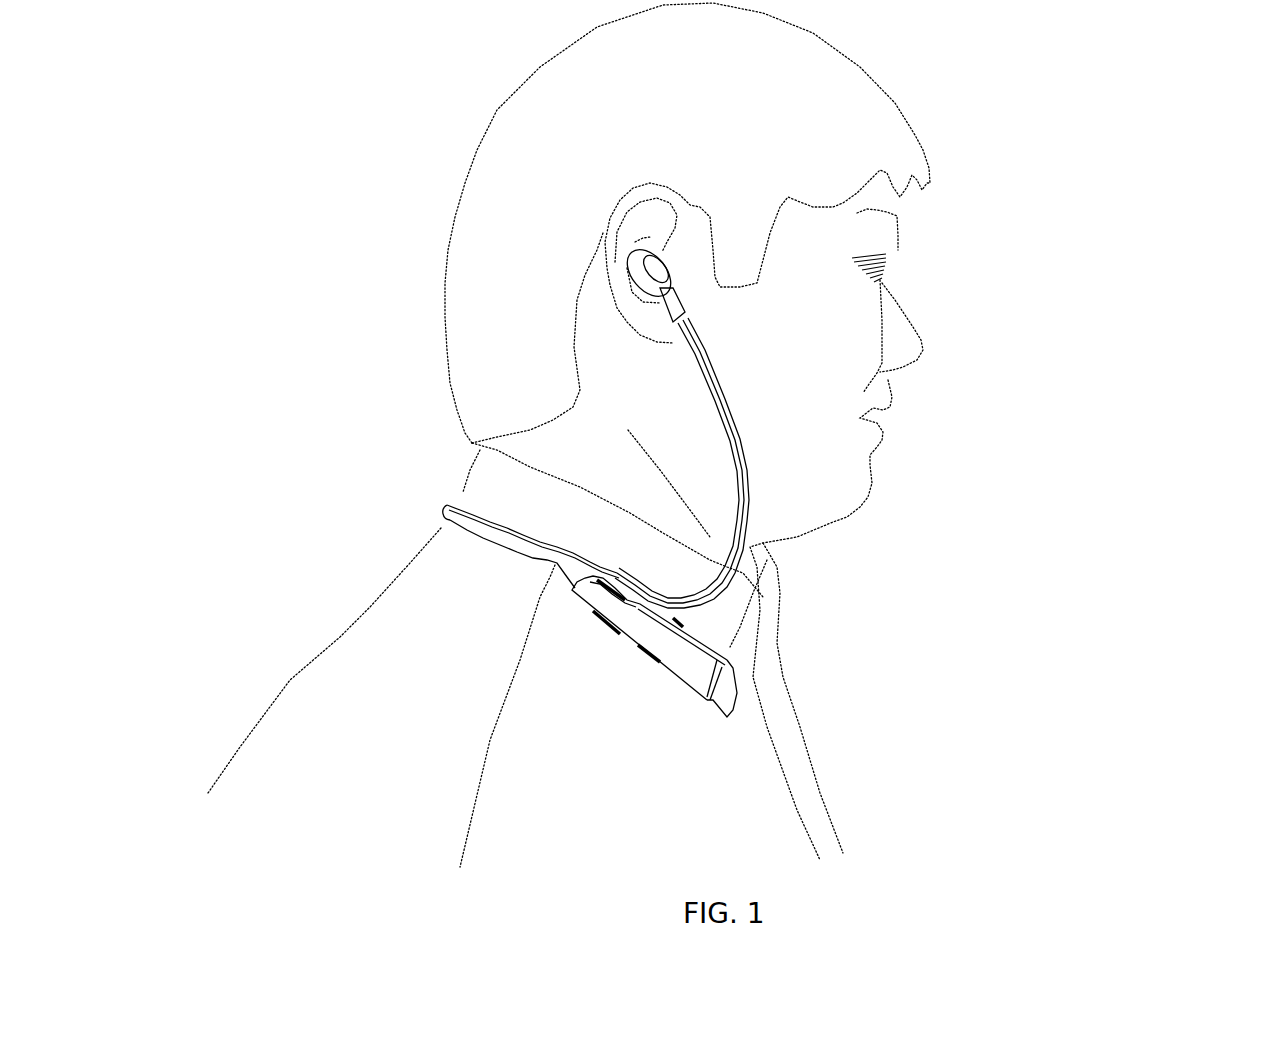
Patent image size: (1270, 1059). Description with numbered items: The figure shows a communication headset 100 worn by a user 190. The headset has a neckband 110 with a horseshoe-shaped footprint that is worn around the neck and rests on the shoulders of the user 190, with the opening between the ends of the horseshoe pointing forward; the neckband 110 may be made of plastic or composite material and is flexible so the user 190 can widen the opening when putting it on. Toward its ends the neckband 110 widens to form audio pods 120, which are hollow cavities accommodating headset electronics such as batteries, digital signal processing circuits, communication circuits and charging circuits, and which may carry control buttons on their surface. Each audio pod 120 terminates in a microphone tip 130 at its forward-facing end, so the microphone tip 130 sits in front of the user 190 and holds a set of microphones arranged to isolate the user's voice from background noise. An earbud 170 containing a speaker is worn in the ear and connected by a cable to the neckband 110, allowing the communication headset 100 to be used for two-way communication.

The communication headset 100 is at (962, 269).
The neckband 110 is at (453, 503).
The audio pod 120 is at (678, 657).
The microphone tip 130 is at (723, 690).
The earbud 170 is at (650, 267).
The user 190 is at (553, 150).